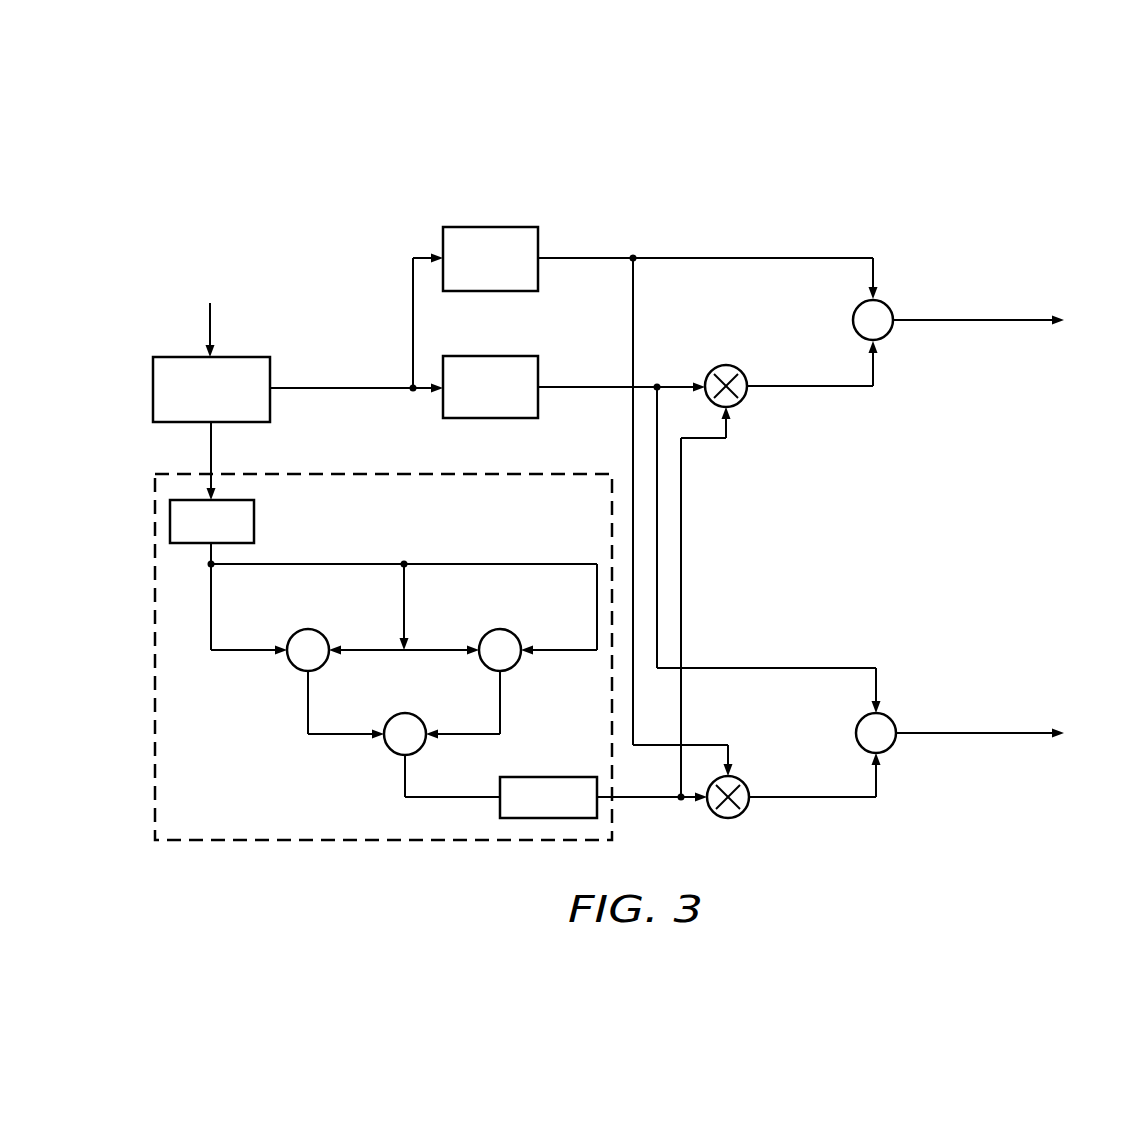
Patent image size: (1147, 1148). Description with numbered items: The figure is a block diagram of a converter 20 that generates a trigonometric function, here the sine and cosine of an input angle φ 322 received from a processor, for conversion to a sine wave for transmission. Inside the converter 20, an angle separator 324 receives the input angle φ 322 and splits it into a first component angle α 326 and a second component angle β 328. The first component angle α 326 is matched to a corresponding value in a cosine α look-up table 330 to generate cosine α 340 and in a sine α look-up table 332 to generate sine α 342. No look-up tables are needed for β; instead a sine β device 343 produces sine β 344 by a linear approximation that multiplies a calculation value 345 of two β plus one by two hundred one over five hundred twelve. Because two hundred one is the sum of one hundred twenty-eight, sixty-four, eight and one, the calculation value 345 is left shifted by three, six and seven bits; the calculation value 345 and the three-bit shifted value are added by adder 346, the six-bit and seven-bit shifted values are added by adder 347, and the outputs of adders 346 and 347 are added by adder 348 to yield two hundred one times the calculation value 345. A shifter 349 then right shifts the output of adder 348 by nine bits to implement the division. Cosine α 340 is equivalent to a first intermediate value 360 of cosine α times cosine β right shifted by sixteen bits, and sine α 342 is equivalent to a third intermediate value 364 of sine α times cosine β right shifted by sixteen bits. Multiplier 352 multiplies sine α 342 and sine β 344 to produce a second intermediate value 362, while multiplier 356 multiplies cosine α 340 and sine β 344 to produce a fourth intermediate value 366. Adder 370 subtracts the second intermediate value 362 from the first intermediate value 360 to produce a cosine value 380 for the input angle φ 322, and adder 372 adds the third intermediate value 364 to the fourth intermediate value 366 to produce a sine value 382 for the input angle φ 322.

The converter 20 is at (246, 224).
The input angle φ 322 is at (214, 330).
The angle separator 324 is at (182, 356).
The first component angle α 326 is at (323, 391).
The second component angle β 328 is at (208, 440).
The cosine α look-up table 330 is at (493, 226).
The sine α look-up table 332 is at (493, 355).
The cosine α 340 is at (590, 262).
The sine α 342 is at (590, 391).
The sine β device 343 is at (249, 782).
The sine β 344 is at (643, 801).
The calculation value 345 is at (256, 521).
The adder 346 is at (498, 628).
The adder 347 is at (306, 628).
The adder 348 is at (403, 712).
The shifter 349 is at (550, 776).
The multiplier 352 is at (725, 364).
The multiplier 356 is at (730, 819).
The first intermediate value 360 is at (805, 262).
The second intermediate value 362 is at (805, 390).
The third intermediate value 364 is at (815, 672).
The fourth intermediate value 366 is at (815, 801).
The adder 370 is at (892, 336).
The adder 372 is at (895, 749).
The cosine value 380 is at (1015, 323).
The sine value 382 is at (1015, 736).